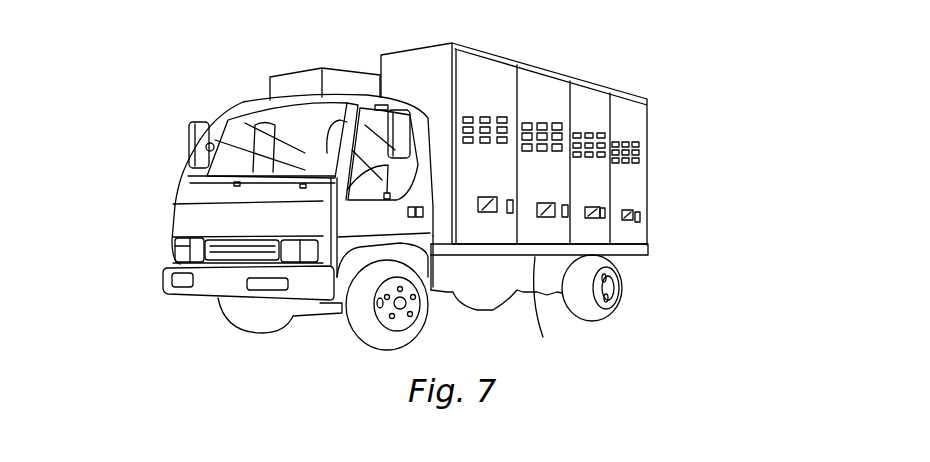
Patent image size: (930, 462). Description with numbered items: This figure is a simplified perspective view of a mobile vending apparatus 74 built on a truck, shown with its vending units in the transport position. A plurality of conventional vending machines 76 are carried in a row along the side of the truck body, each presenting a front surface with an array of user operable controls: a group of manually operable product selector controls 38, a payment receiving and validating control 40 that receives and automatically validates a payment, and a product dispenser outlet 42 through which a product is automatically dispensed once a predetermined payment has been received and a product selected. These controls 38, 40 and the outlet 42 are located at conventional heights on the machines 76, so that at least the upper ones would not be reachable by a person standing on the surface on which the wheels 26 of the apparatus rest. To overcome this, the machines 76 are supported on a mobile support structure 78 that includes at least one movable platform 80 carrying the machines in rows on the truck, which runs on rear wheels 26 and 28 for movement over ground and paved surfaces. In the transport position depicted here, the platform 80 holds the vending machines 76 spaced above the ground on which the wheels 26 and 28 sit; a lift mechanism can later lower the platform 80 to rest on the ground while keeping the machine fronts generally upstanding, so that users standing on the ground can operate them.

The rear wheels 26 is at (625, 297).
The rear wheels 28 is at (480, 312).
The product selector controls 38 is at (615, 146).
The payment receiving and validating control 40 is at (645, 163).
The product dispenser outlet 42 is at (628, 218).
The mobile vending apparatus 74 is at (522, 128).
The vending machines 76 is at (338, 66).
The mobile support structure 78 is at (655, 258).
The movable platform 80 is at (553, 308).